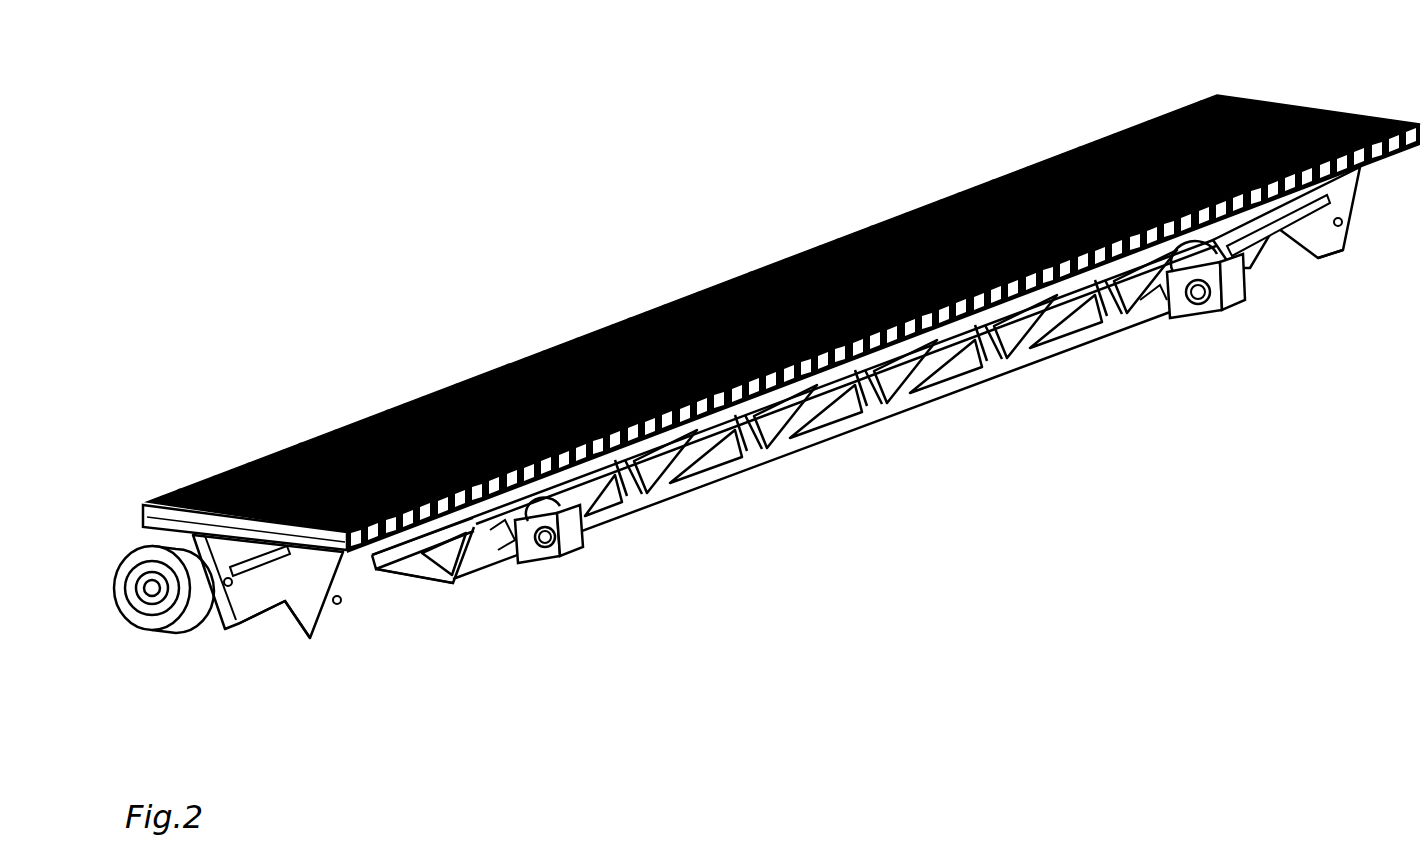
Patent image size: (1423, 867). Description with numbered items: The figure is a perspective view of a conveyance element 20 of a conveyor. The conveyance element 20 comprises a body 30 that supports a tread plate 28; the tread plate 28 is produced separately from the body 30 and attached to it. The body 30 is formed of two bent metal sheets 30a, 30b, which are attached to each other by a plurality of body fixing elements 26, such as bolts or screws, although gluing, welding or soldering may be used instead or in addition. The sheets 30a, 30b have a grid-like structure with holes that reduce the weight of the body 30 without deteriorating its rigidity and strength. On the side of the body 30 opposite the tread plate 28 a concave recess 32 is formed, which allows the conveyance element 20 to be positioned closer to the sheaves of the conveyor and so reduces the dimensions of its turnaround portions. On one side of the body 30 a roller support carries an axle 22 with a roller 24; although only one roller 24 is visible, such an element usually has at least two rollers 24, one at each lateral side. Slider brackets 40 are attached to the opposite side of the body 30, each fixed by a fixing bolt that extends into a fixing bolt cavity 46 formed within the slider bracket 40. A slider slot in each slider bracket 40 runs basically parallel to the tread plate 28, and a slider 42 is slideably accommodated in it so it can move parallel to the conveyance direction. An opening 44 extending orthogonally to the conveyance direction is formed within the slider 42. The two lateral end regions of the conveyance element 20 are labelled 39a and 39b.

The conveyance element 20 is at (358, 100).
The axle 22 is at (157, 602).
The roller 24 is at (140, 567).
The body fixing elements 26 is at (340, 600).
The tread plate 28 is at (746, 248).
The body 30 is at (757, 497).
The sheet 30a is at (245, 580).
The sheet 30b is at (290, 642).
The concave recess 32 is at (263, 642).
The first end 39a is at (388, 617).
The second end 39b is at (1279, 297).
The slider bracket 40 is at (524, 565).
The slider 42 is at (580, 540).
The opening 44 is at (553, 565).
The fixing bolt cavity 46 is at (498, 565).